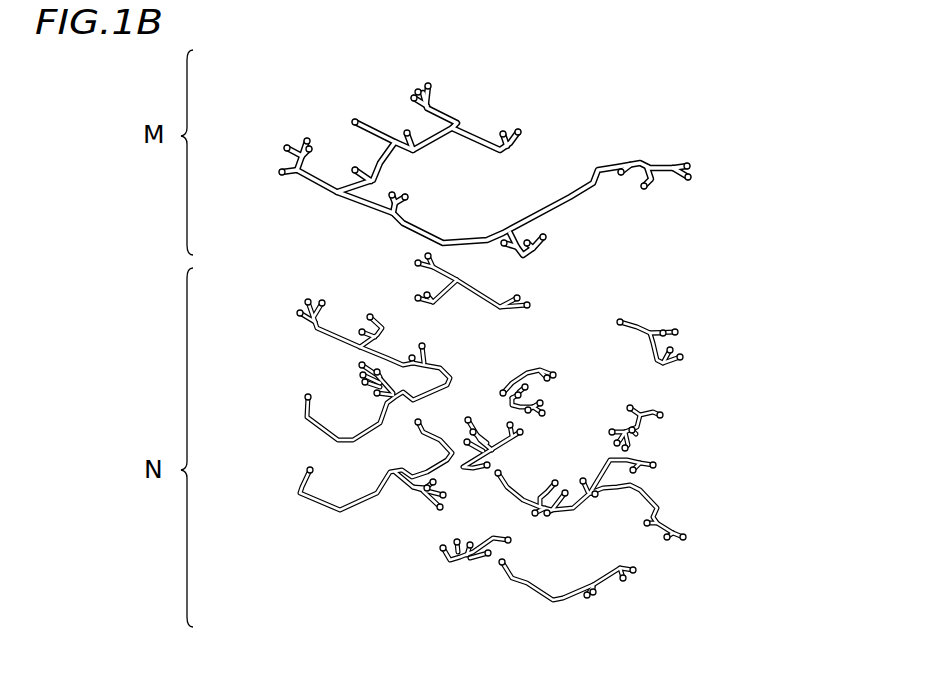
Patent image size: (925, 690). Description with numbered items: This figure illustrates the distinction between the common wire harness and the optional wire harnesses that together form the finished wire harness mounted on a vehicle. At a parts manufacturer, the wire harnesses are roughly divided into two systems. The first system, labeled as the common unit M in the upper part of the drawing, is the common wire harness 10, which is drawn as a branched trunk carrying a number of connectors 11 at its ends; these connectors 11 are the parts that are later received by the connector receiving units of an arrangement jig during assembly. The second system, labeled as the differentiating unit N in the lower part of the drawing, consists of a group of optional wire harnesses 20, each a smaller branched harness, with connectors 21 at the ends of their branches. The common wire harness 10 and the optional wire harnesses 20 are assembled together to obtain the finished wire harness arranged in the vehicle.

The common wire harness 10 is at (607, 125).
The connector 11 is at (695, 165).
The optional wire harness 20 is at (531, 288).
The connector of sub harness 21 is at (533, 302).